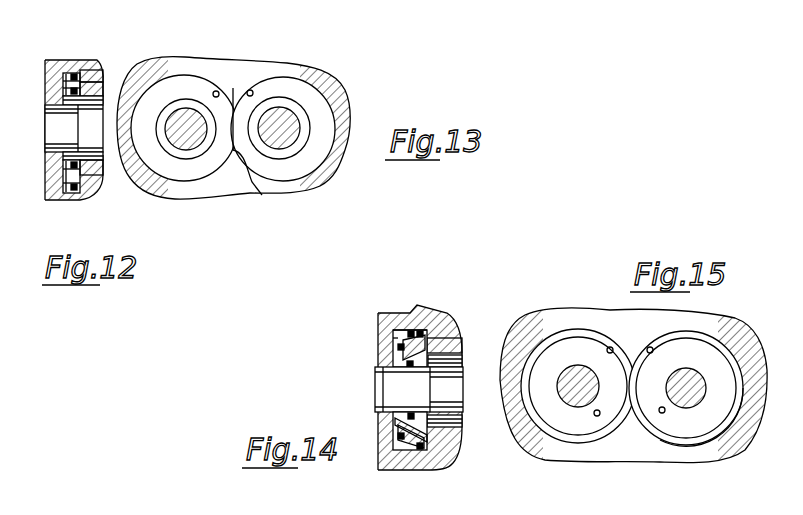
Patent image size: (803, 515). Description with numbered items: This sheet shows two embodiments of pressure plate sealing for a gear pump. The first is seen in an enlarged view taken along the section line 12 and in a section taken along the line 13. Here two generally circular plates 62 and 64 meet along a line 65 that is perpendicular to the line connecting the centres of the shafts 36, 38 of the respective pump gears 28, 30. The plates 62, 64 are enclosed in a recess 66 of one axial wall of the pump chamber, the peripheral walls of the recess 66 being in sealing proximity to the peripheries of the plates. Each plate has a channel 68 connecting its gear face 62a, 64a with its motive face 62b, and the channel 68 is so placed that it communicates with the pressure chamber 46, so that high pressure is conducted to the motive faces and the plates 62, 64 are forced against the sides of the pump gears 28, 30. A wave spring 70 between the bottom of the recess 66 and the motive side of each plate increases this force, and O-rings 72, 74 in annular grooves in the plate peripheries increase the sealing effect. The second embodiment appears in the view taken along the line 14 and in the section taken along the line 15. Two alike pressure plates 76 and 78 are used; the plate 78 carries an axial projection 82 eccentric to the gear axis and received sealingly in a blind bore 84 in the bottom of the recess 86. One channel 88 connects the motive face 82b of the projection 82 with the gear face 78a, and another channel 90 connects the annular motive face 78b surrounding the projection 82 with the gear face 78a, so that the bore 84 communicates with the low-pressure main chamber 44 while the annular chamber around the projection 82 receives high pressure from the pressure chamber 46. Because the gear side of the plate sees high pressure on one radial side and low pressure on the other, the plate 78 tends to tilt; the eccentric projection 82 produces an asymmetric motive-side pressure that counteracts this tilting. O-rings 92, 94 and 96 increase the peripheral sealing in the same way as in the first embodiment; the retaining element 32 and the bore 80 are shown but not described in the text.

In FIG. 13, the section line 12— 12 is at (186, 129).
In FIG. 12, the section line 13— 13 is at (80, 228).
In FIG. 15, the section line 14— 14 is at (587, 278).
In FIG. 14, the section line 15— 15 is at (427, 283).
In FIG. 12, the pump gear 28 is at (92, 178).
In FIG. 14, the pump gear 30 is at (438, 443).
In FIG. 12, the retaining nut 32 is at (98, 92).
In FIG. 12, the shaft 36 is at (58, 125).
In FIG. 13, the shaft 36 is at (178, 117).
In FIG. 13, the shaft 38 is at (297, 119).
In FIG. 15, the main chamber 44 is at (540, 447).
In FIG. 15, the pressure chamber 46 is at (672, 320).
In FIG. 12, the pressure plate 62 is at (70, 178).
In FIG. 13, the pressure plate 62 is at (175, 165).
In FIG. 13, the gear face 62a is at (165, 87).
In FIG. 12, the motive face 62b is at (68, 100).
In FIG. 13, the pressure plate 64 is at (301, 165).
In FIG. 13, the gear face 64a is at (300, 95).
In FIG. 13, the meeting line 65 is at (247, 165).
In FIG. 12, the recess 66 is at (62, 197).
In FIG. 12, the channel 68 is at (100, 75).
In FIG. 13, the channel 68 is at (216, 91).
In FIG. 12, the wave spring 70 is at (72, 82).
In FIG. 12, the O-ring 72 is at (82, 72).
In FIG. 12, the O-ring 74 is at (70, 155).
In FIG. 15, the pressure plate 76 is at (565, 425).
In FIG. 14, the pressure plate 78 is at (428, 342).
In FIG. 15, the pressure plate 78 is at (723, 420).
In FIG. 14, the gear face 78a is at (430, 421).
In FIG. 14, the annular motive face 78b is at (395, 334).
In FIG. 15, the shaft bore 80 is at (590, 423).
In FIG. 14, the axial projection 82 is at (391, 358).
In FIG. 15, the axial projection 82 is at (702, 423).
In FIG. 14, the motive face 82b is at (392, 352).
In FIG. 14, the blind bore 84 is at (395, 338).
In FIG. 14, the recess 86 is at (412, 329).
In FIG. 14, the channel 88 is at (397, 423).
In FIG. 15, the channel 88 is at (662, 413).
In FIG. 14, the channel 90 is at (413, 353).
In FIG. 15, the channel 90 is at (653, 348).
In FIG. 14, the O-ring 92 is at (420, 452).
In FIG. 14, the O-ring 94 is at (402, 443).
In FIG. 14, the O-ring 96 is at (407, 412).